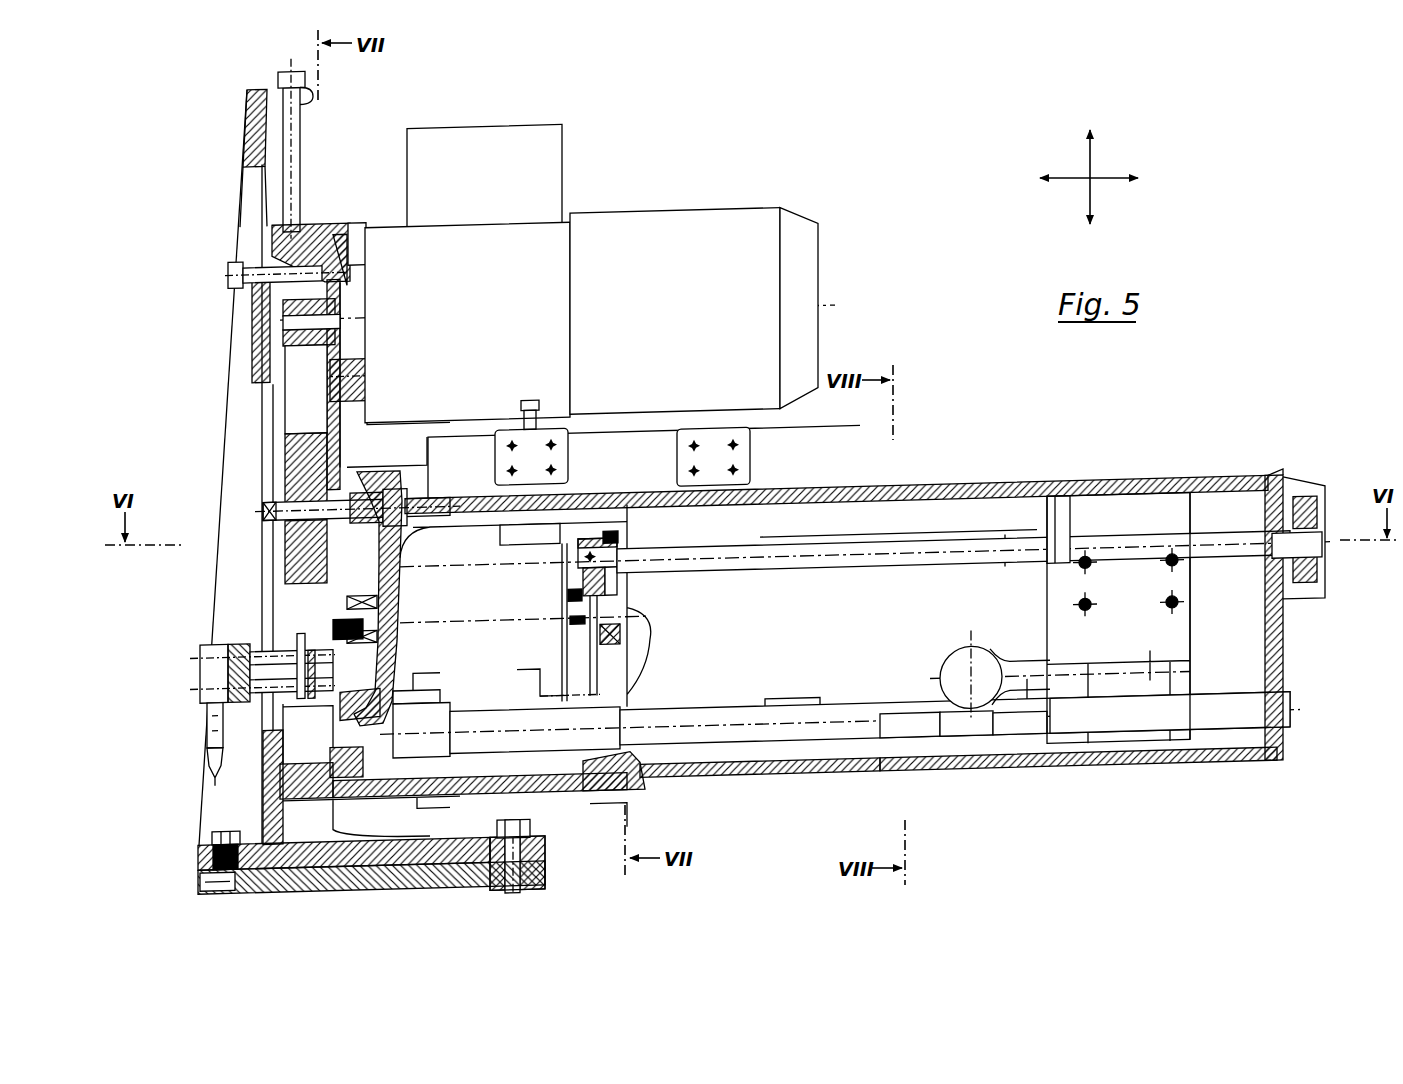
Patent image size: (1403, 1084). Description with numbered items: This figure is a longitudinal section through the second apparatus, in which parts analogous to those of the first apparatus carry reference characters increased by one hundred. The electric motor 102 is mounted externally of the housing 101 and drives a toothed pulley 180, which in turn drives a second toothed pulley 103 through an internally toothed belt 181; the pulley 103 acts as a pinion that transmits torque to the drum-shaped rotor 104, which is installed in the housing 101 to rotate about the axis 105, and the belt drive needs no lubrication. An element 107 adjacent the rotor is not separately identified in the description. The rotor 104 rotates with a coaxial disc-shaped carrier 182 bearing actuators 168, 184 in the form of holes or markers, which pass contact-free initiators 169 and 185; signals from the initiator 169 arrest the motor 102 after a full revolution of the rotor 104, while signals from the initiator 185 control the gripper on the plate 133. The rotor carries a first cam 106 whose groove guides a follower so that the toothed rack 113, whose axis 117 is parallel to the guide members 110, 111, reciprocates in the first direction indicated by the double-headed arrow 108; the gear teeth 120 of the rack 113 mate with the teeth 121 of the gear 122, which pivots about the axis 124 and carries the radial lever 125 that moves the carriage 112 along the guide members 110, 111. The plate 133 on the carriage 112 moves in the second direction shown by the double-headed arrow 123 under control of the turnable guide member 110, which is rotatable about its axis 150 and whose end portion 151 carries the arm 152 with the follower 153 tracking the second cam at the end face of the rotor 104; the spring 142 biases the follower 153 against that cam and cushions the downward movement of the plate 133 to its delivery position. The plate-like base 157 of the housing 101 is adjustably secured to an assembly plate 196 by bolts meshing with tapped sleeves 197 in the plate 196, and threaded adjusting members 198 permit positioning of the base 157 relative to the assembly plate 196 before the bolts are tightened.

The housing 101 is at (250, 240).
The toothed pulley 180 is at (250, 355).
The internally toothed belt 181 is at (303, 368).
The second toothed pulley 103 is at (285, 443).
The stub shaft 107 is at (283, 480).
The disc-shaped carrier 182 is at (330, 607).
The actuator 168 is at (333, 617).
The initiator 169 is at (363, 657).
The initiator 185 is at (200, 690).
The actuator 184 is at (273, 717).
The plate-like base 157 is at (200, 866).
The threaded adjusting member 198 is at (200, 886).
The tapped sleeve 197 is at (542, 862).
The assembly plate 196 is at (543, 862).
The axis 105 is at (627, 760).
The axis of rack 117 is at (723, 757).
The toothed rack 113 is at (738, 745).
The gear teeth 120 is at (897, 720).
The teeth 121 is at (927, 720).
The gear 122 is at (947, 703).
The axis 124 is at (1025, 693).
The lever 125 is at (1027, 740).
The guide member 111 is at (1233, 703).
The end portion 151 is at (605, 555).
The arm 152 is at (615, 565).
The follower 153 is at (625, 580).
The axis 150 is at (903, 527).
The guide member 110 is at (933, 543).
The plate 133 is at (1077, 518).
The carriage 112 is at (1130, 485).
The spring 142 is at (1310, 497).
The motor 102 is at (588, 253).
The first cam 106 is at (523, 538).
The rotor 104 is at (535, 553).
The double-headed arrow 108 is at (1121, 171).
The double-headed arrow 123 is at (1104, 195).